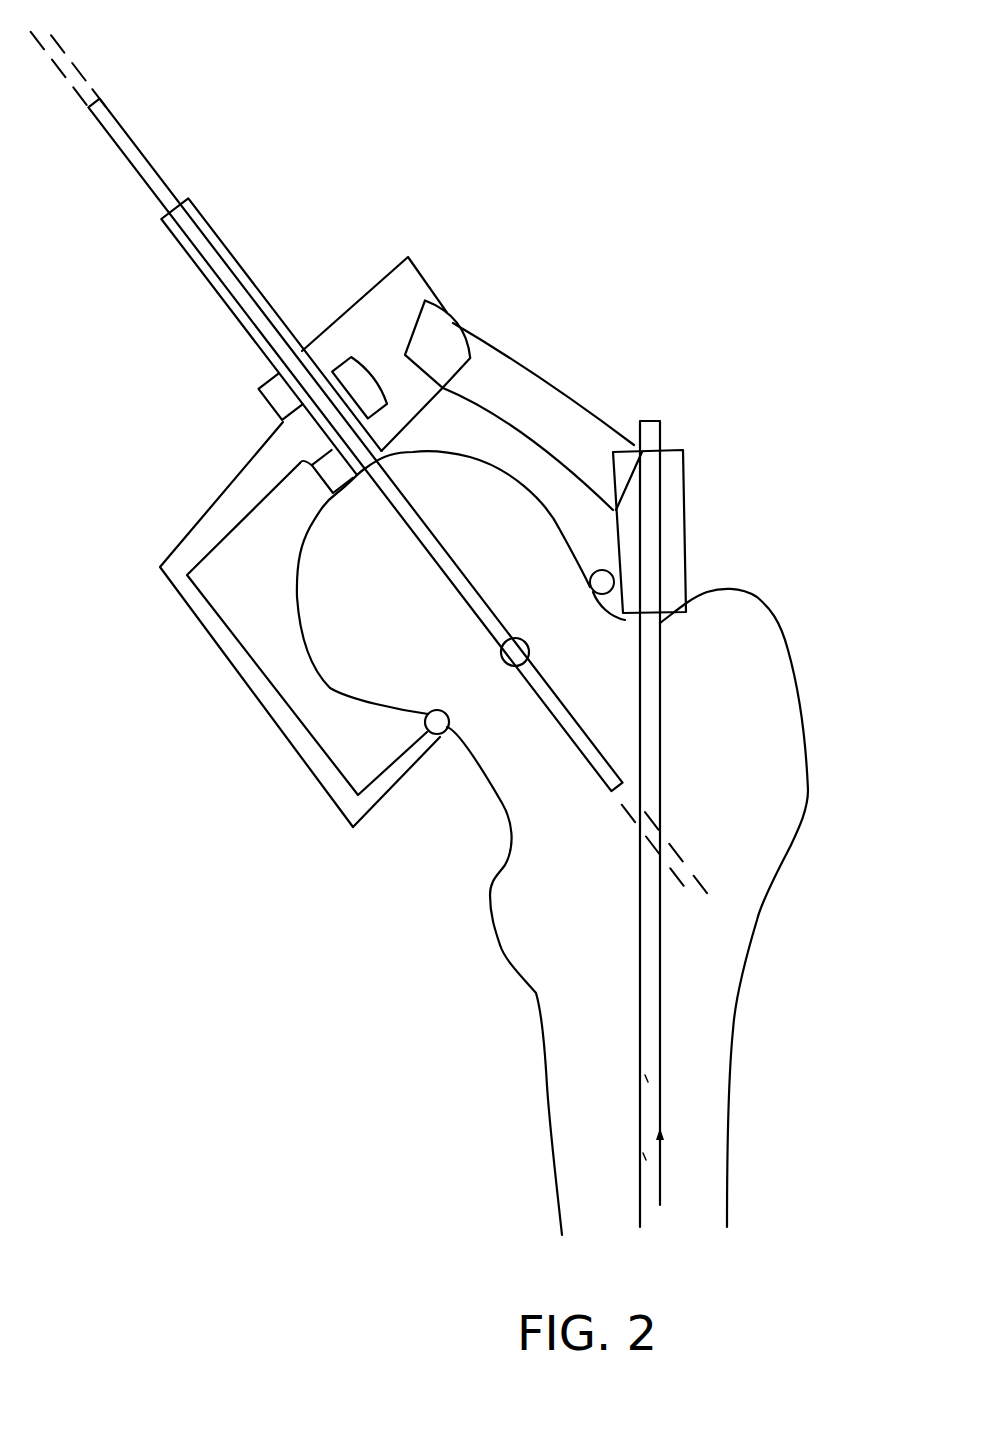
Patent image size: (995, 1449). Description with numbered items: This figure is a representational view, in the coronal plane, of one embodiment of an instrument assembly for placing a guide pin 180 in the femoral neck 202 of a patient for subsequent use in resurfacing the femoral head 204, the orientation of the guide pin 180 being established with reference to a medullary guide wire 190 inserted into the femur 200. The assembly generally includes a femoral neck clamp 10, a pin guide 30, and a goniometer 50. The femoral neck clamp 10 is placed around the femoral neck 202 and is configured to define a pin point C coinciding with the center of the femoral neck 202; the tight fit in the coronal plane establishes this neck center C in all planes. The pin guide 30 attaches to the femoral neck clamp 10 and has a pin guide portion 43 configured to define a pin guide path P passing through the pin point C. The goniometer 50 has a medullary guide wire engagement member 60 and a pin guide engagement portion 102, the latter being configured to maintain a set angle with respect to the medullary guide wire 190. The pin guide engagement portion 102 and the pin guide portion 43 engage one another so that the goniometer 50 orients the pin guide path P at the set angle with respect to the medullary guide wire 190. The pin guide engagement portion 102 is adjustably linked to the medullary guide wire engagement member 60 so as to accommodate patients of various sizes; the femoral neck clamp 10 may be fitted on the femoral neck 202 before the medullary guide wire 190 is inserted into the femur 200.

The pin guide path P is at (80, 68).
The guide pin 180 is at (153, 167).
The pin guide engagement portion 102 is at (333, 337).
The pin guide portion 43 is at (283, 422).
The goniometer 50 is at (525, 353).
The medullary guide wire 190 is at (665, 430).
The medullary guide wire engagement member 60 is at (673, 522).
The pin guide 30 is at (198, 626).
The femoral neck clamp 10 is at (443, 736).
The pin point C is at (516, 638).
The femoral head 204 is at (343, 632).
The femoral neck 202 is at (517, 787).
The femur 200 is at (722, 1023).